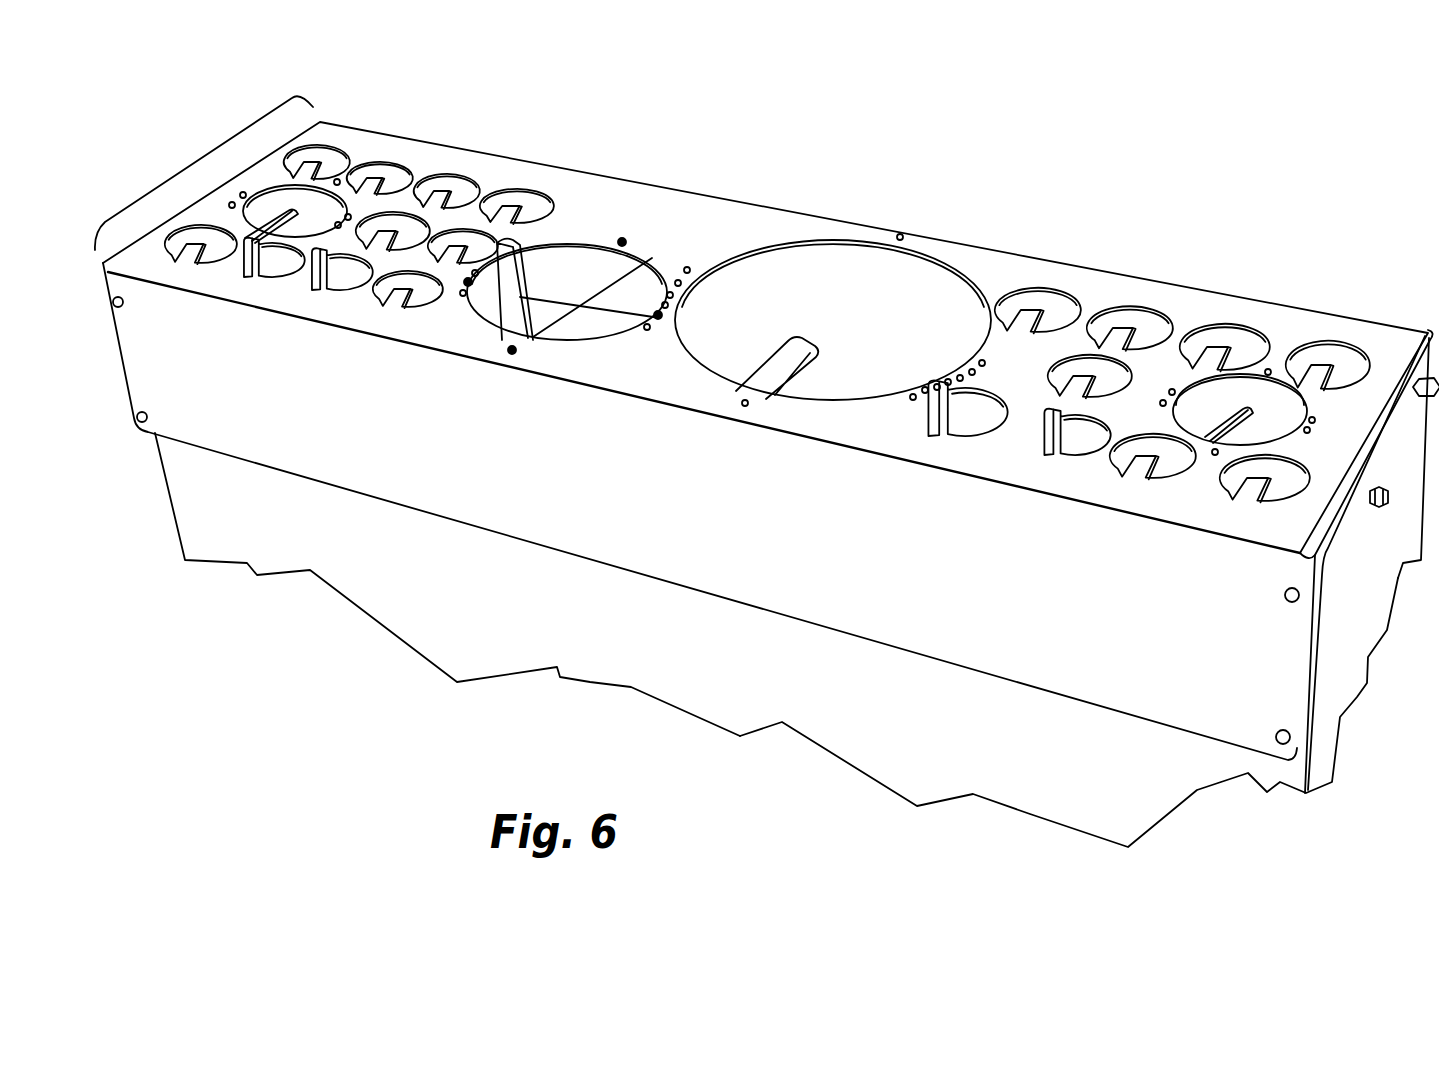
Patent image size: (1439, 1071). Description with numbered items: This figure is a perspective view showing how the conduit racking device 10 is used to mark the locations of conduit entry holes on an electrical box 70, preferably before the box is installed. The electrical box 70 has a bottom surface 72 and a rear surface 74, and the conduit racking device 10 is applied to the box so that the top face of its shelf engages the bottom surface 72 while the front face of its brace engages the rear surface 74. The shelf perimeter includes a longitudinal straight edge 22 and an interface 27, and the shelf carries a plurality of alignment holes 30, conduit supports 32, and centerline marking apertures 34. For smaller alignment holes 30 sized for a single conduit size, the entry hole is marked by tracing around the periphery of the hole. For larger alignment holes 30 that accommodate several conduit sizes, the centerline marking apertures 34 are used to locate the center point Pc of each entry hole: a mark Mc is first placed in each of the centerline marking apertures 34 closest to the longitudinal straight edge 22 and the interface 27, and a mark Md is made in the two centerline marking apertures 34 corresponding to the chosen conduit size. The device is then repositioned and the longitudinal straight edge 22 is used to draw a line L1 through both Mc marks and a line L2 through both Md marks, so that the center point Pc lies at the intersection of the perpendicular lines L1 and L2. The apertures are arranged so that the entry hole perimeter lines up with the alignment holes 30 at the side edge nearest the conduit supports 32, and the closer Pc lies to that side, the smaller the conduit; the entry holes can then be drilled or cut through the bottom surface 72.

The conduit racking device 10 is at (227, 146).
The longitudinal straight edge 22 is at (1222, 293).
The interface 27 is at (751, 426).
The alignment holes 30 is at (1047, 289).
The conduit supports 32 is at (508, 258).
The centerline marking apertures 34 is at (467, 281).
The electrical box 70 is at (1218, 772).
The bottom surface 72 is at (928, 290).
The rear surface 74 is at (205, 515).
The mark Mc is at (621, 241).
The mark Md is at (658, 314).
The center point Pc is at (560, 312).
The line L1 is at (560, 312).
The line L2 is at (560, 312).